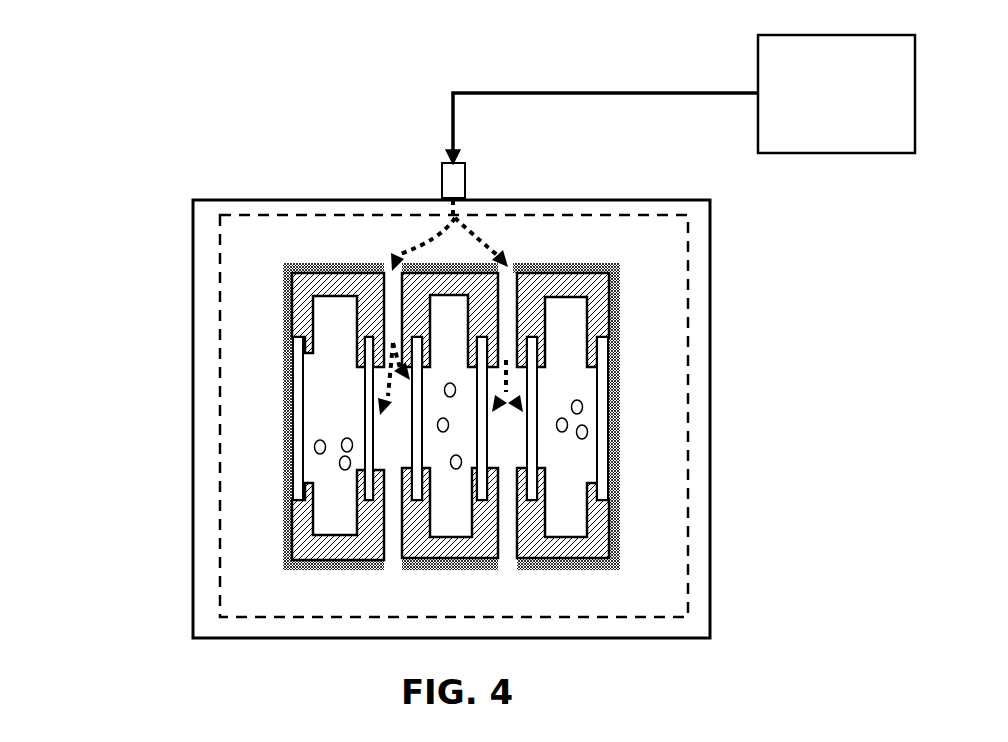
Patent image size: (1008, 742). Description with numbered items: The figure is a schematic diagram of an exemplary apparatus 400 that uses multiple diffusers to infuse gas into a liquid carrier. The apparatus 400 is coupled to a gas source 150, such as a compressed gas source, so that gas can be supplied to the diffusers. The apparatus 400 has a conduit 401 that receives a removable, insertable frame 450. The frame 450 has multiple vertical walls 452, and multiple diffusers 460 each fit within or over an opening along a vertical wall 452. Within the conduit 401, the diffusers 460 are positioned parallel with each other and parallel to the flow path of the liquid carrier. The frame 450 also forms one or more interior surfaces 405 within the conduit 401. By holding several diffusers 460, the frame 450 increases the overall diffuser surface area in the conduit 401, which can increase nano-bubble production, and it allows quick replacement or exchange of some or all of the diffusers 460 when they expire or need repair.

The apparatus 400 is at (209, 152).
The conduit 401 is at (130, 345).
The gas source 150 is at (807, 104).
The removable frame 450 is at (335, 252).
The vertical walls 452 is at (286, 280).
The interior surfaces 405 is at (332, 288).
The diffusers 460 is at (740, 428).